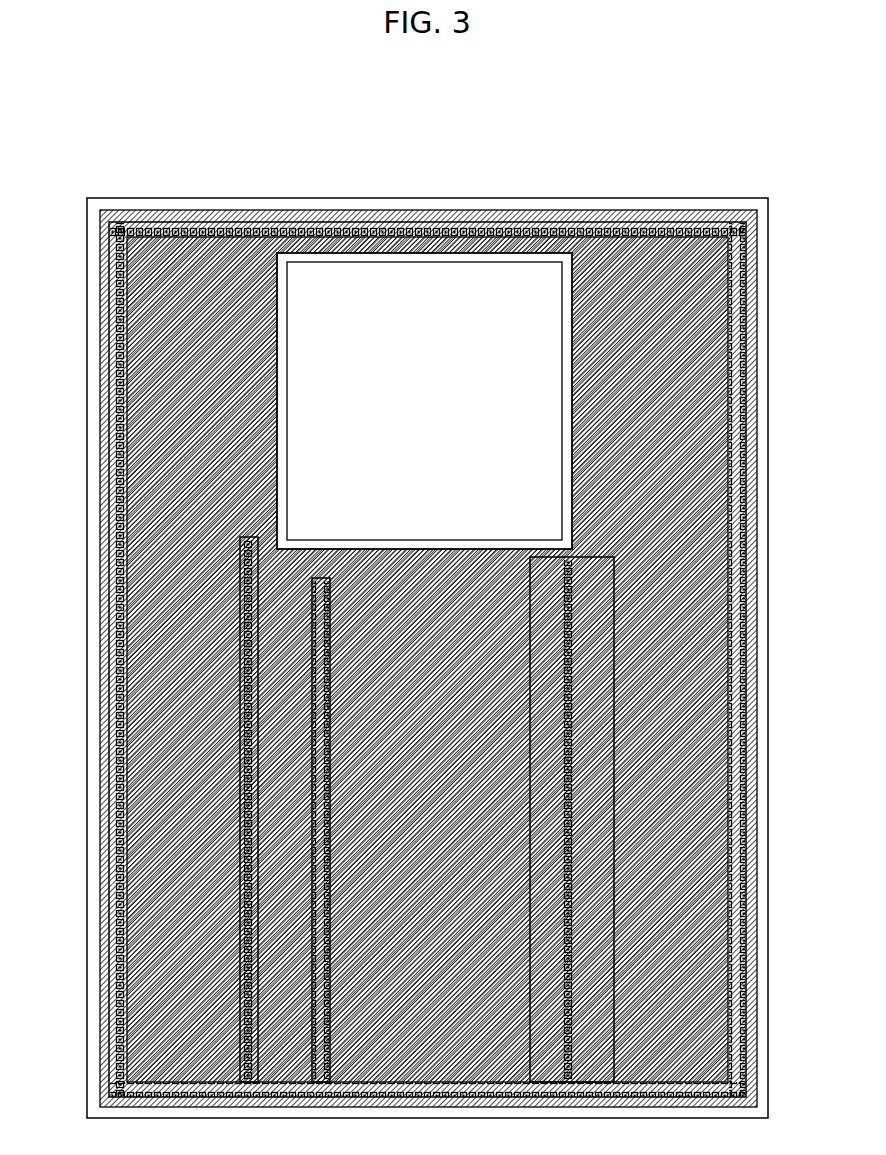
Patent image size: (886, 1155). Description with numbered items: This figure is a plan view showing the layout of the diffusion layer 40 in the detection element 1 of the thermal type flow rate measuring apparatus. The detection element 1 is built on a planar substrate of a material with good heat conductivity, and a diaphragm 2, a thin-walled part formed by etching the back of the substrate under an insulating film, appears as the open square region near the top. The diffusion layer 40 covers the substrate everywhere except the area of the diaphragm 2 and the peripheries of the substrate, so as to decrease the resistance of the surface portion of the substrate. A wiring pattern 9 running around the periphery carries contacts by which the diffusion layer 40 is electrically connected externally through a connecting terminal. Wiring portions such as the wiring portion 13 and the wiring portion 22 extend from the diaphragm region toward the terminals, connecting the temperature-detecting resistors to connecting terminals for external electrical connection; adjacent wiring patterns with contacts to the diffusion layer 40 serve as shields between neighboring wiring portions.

The detection element 1 is at (192, 199).
The diaphragm 2 is at (282, 262).
The wiring pattern 9 is at (540, 221).
The wiring portion 13 is at (240, 636).
The wiring portion 22 is at (586, 665).
The diffusion layer 40 is at (182, 423).